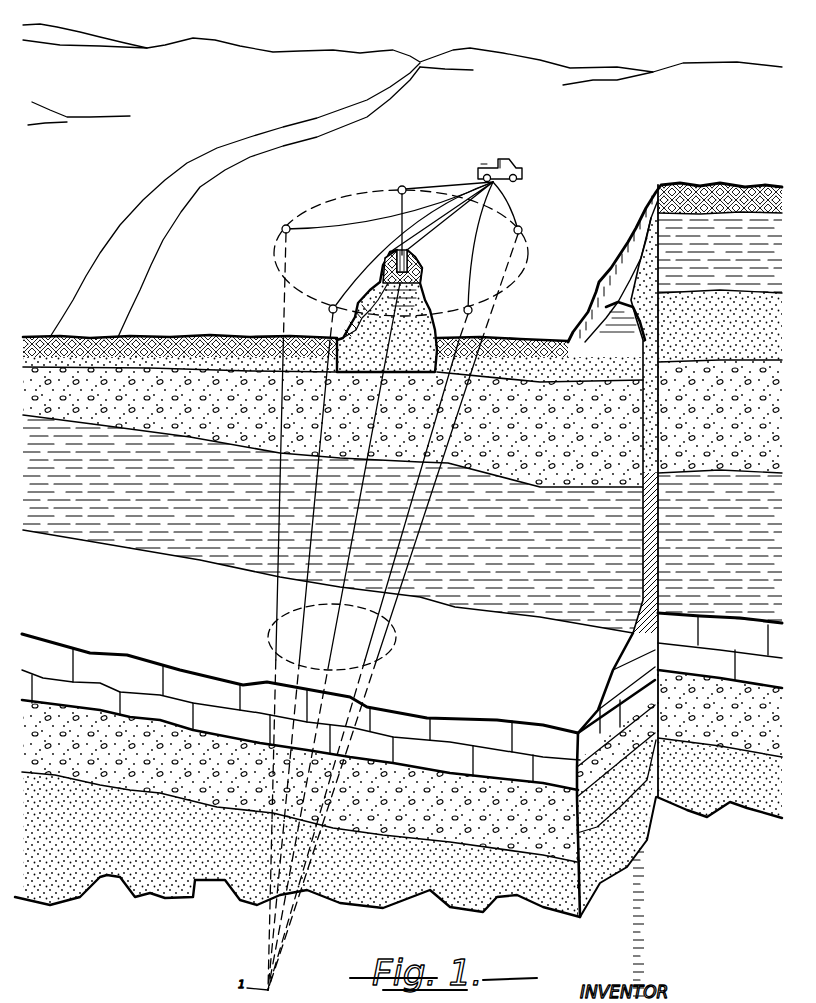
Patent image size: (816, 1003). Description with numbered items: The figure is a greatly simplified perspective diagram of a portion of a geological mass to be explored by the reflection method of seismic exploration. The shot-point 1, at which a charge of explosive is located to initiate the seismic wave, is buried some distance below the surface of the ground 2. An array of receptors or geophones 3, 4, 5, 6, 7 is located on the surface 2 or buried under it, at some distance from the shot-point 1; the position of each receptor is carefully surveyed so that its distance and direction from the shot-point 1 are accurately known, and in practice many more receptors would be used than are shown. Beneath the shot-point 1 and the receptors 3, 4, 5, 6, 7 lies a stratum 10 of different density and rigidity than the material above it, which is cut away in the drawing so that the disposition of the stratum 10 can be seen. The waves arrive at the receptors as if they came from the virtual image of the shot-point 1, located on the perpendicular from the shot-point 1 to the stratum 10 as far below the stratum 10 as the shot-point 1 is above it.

The shot-point 1 is at (419, 274).
The surface of the ground 2 is at (584, 282).
The receptor 3 is at (338, 576).
The receptor 4 is at (282, 229).
The receptor 5 is at (522, 229).
The receptor 6 is at (329, 310).
The receptor 7 is at (464, 309).
The stratum 10 is at (466, 678).